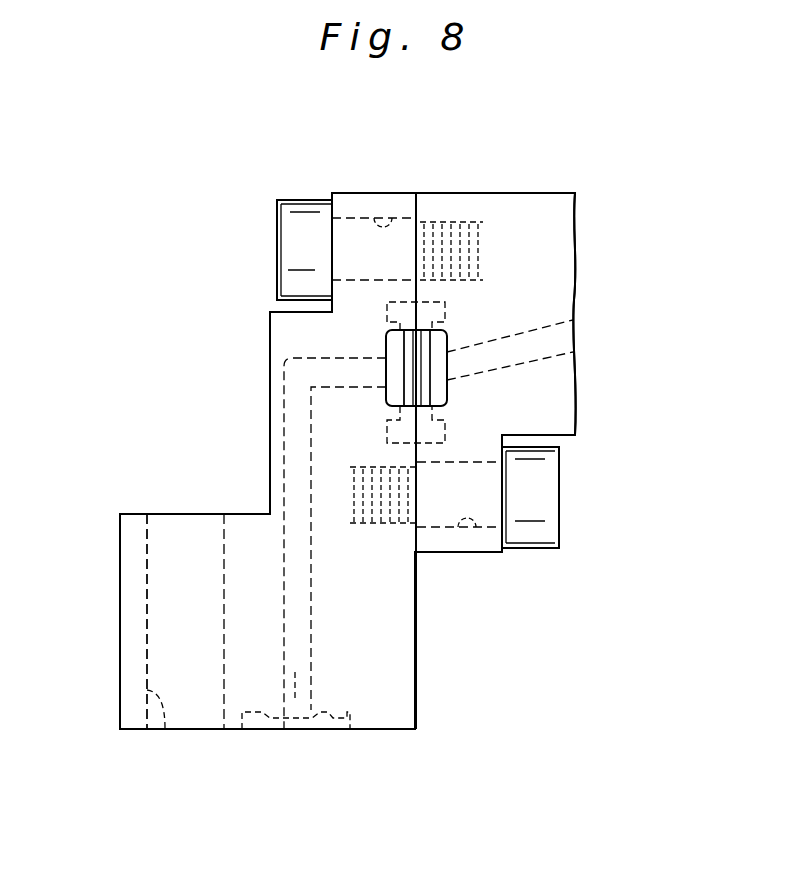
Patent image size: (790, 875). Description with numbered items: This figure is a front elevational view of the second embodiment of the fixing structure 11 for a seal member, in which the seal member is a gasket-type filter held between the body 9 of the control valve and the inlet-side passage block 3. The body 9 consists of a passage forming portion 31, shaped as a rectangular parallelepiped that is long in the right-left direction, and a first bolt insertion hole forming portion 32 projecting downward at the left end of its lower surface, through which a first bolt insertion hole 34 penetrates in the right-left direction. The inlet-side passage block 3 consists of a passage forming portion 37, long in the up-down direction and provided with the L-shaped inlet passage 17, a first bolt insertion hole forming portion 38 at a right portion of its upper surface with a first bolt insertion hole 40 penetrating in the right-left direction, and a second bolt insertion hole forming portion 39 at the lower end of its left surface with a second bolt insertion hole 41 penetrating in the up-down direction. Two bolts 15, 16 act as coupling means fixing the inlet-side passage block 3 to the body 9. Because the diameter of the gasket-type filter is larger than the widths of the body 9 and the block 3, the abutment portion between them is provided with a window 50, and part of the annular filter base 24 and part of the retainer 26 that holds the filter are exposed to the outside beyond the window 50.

The inlet-side passage block 3 is at (415, 678).
The body 9 is at (557, 193).
The fixing structure 11 is at (459, 338).
The bolt 15 is at (283, 242).
The bolt 16 is at (543, 500).
The inlet passage 17 is at (290, 713).
The filter base 24 is at (407, 393).
The retainer 26 is at (413, 373).
The passage forming portion 31 is at (557, 252).
The first bolt insertion hole forming portion 32 is at (438, 540).
The first bolt insertion hole 34 is at (478, 520).
The passage forming portion 37 is at (380, 708).
The first bolt insertion hole forming portion 38 is at (348, 200).
The second bolt insertion hole forming portion 39 is at (131, 643).
The first bolt insertion hole 40 is at (385, 222).
The second bolt insertion hole 41 is at (165, 728).
The window 50 is at (386, 348).